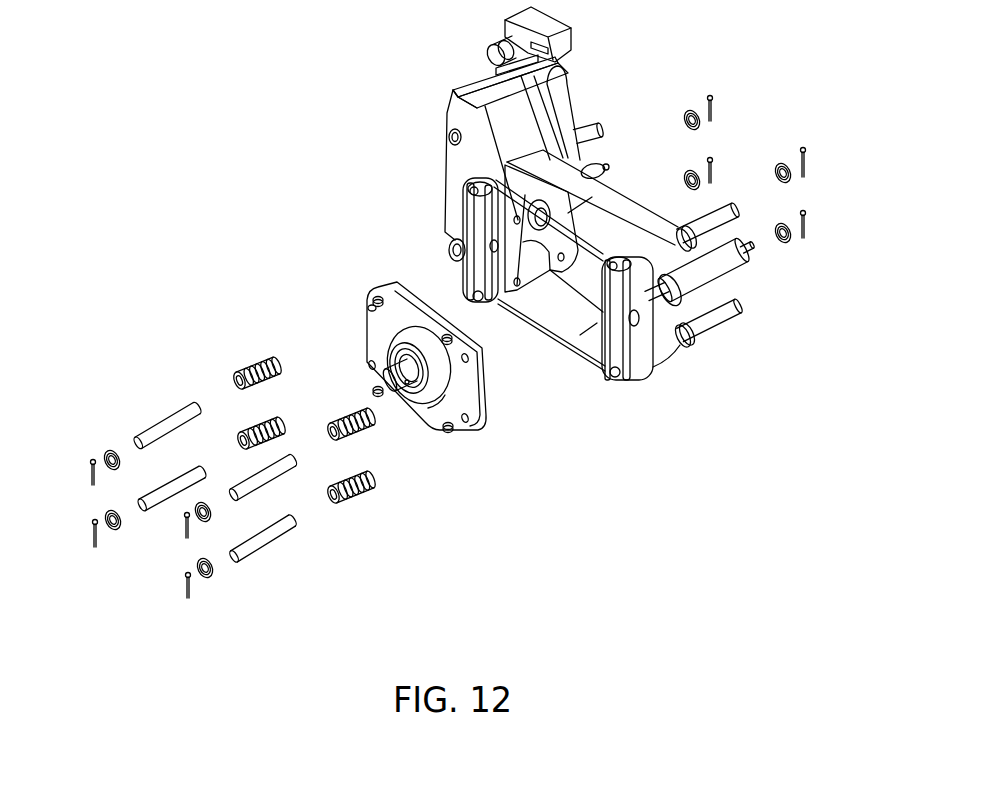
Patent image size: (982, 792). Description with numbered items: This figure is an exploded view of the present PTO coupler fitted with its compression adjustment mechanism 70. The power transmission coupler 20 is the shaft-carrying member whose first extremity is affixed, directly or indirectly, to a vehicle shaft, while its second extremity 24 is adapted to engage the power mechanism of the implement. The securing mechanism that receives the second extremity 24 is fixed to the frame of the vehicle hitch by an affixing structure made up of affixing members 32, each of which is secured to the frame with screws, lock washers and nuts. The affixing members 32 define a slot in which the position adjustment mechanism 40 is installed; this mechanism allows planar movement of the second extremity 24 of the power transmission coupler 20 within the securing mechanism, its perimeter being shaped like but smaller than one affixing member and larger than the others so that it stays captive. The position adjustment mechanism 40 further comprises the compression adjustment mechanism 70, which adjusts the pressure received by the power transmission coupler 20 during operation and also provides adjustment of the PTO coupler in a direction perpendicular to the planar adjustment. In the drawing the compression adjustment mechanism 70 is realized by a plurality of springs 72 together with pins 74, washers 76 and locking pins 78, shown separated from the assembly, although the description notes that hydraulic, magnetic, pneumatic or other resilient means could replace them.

The power transmission coupler 20 is at (665, 363).
The second extremity 24 is at (367, 352).
The affixing members 32 is at (477, 432).
The position adjustment mechanism 40 is at (427, 428).
The compression adjustment mechanism 70 is at (305, 451).
The springs 72 is at (250, 362).
The pins 74 is at (160, 420).
The washers 76 is at (110, 450).
The locking pins 78 is at (91, 460).